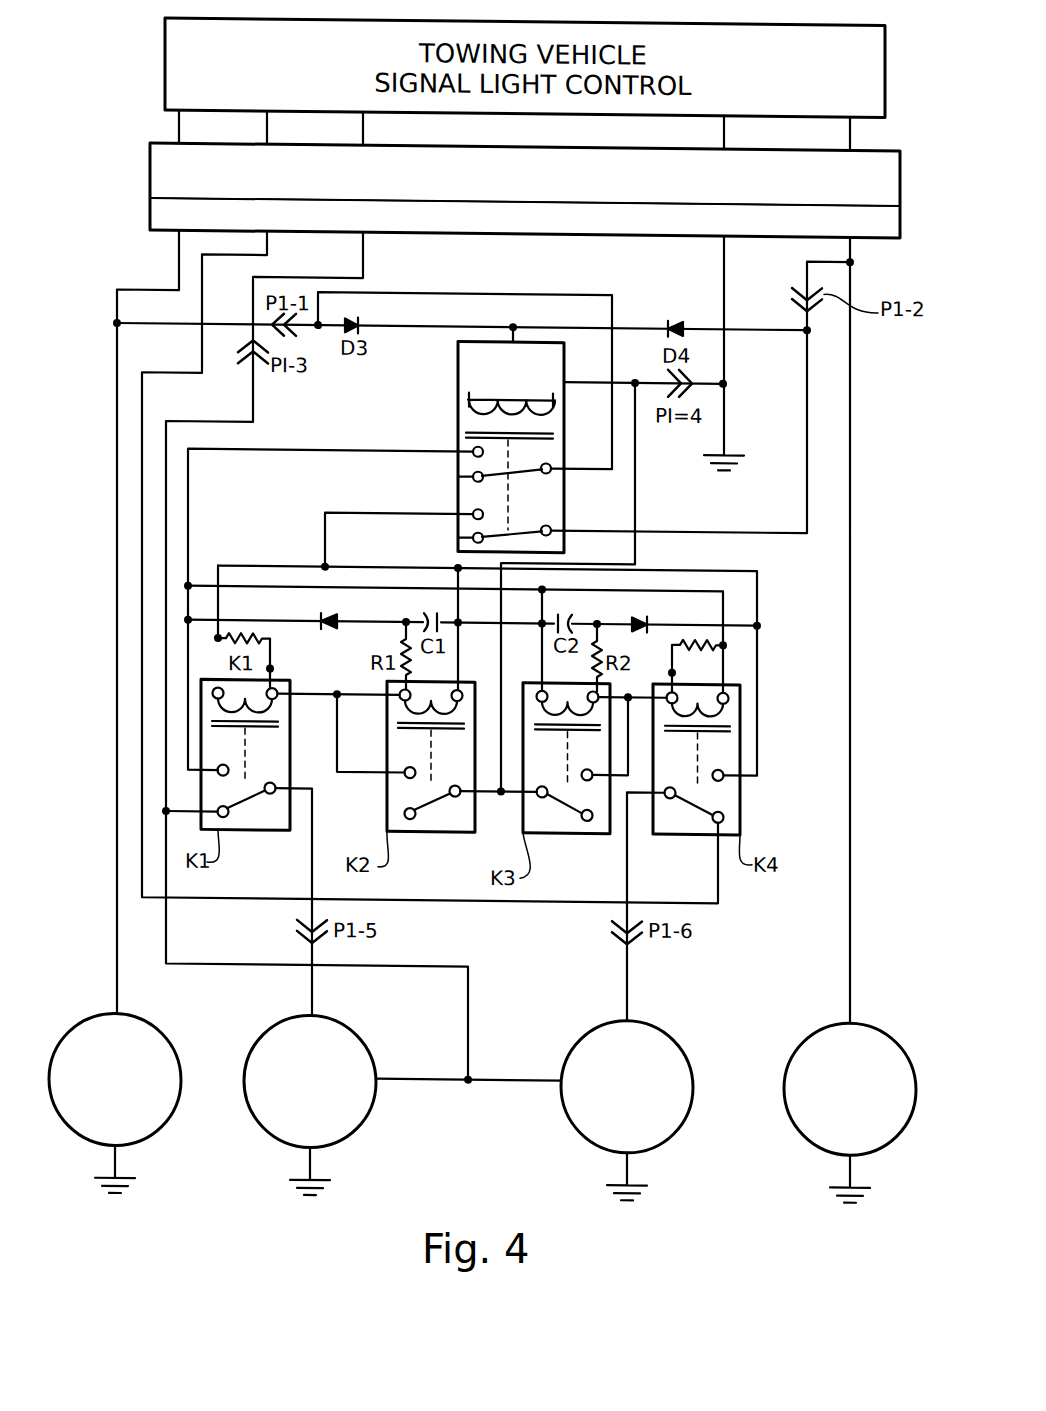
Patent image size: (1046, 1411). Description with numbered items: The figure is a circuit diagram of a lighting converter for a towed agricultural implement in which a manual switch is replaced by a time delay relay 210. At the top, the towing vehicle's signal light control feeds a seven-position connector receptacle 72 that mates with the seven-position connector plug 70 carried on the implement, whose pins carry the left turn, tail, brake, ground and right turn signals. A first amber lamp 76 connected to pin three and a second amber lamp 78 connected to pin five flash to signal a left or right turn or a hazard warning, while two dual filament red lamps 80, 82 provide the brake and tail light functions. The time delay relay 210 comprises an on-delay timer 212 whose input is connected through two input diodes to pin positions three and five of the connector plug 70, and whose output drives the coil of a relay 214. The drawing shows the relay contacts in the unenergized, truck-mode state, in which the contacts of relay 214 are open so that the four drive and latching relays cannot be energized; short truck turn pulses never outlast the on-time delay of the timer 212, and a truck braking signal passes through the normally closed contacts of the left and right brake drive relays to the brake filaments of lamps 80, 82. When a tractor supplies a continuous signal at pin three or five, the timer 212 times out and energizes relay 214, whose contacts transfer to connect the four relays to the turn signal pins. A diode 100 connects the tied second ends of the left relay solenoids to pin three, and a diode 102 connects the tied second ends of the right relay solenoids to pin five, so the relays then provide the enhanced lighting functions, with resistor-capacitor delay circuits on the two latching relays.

The connector plug 70 is at (902, 225).
The connector receptacle 72 is at (902, 176).
The first amber lamp 76 is at (157, 1131).
The second amber lamp 78 is at (805, 1140).
The dual filament red lamp 80 is at (367, 1122).
The dual filament red lamp 82 is at (570, 1123).
The diode 100 is at (333, 615).
The diode 102 is at (637, 614).
The time delay relay 210 is at (462, 447).
The on-delay timer 212 is at (460, 368).
The relay 214 is at (458, 494).